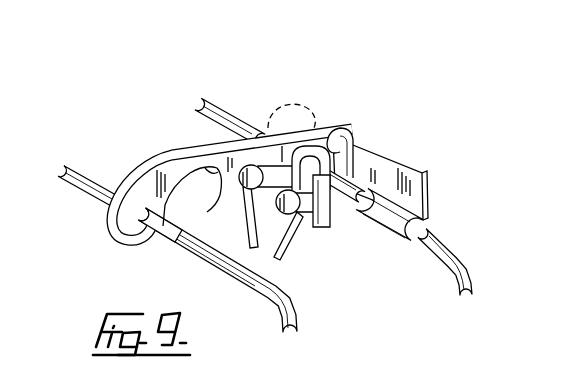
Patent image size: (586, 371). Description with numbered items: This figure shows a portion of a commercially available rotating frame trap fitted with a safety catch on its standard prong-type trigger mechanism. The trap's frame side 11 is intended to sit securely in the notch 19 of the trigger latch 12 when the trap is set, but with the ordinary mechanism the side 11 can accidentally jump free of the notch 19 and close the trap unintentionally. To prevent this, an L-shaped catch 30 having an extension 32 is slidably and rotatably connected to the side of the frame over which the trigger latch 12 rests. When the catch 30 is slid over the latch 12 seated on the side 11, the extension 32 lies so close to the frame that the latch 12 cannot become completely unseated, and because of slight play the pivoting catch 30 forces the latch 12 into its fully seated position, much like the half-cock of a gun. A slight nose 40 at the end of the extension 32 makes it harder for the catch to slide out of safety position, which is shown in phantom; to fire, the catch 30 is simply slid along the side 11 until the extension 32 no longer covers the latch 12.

The side 11 is at (215, 106).
The trigger latch 12 is at (143, 170).
The notch 19 is at (311, 146).
The L-shaped catch 30 is at (430, 227).
The extension 32 is at (368, 147).
The nose 40 is at (270, 107).